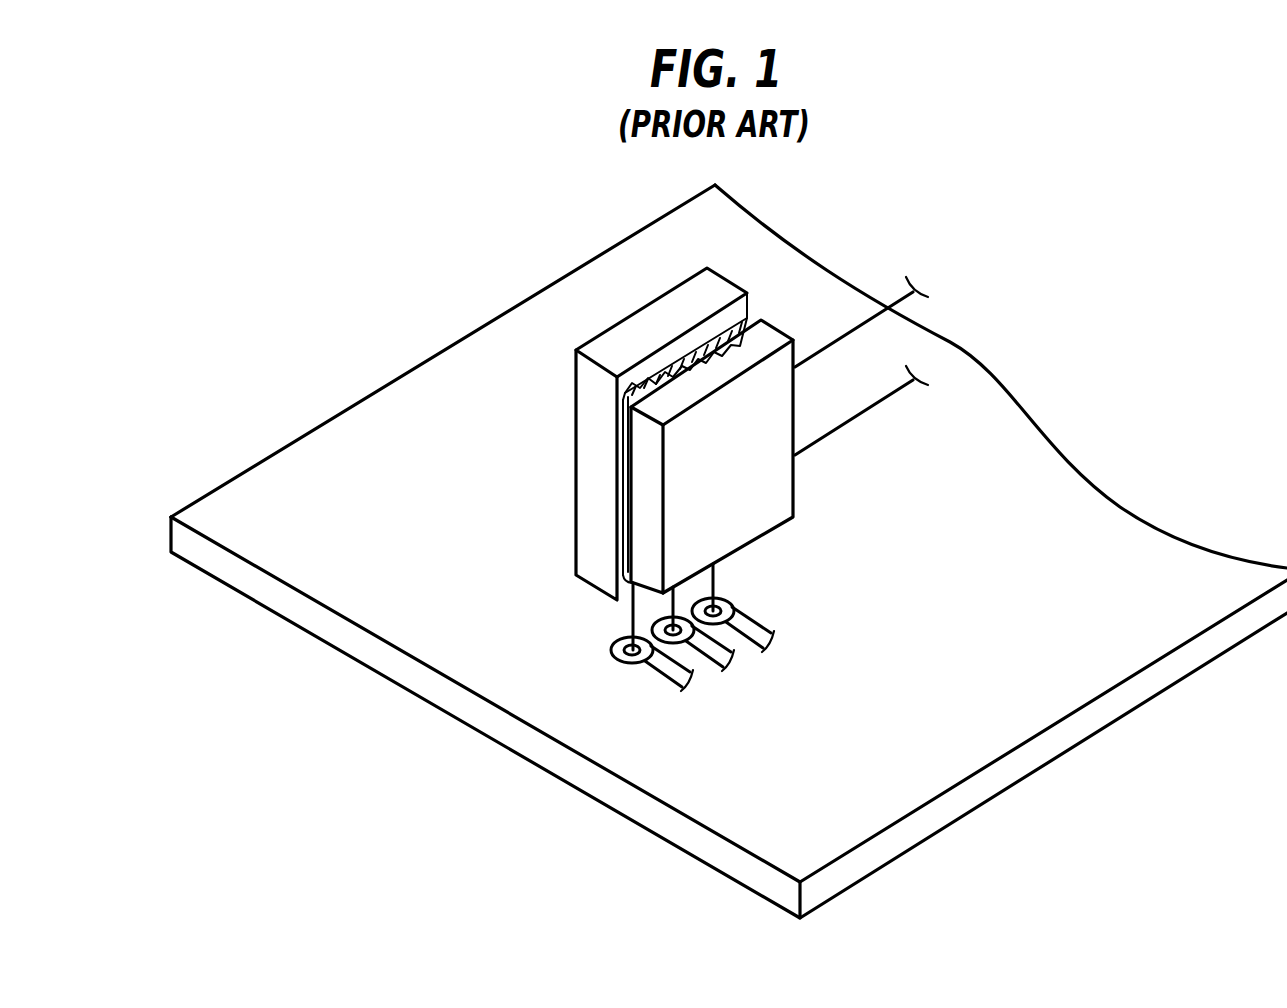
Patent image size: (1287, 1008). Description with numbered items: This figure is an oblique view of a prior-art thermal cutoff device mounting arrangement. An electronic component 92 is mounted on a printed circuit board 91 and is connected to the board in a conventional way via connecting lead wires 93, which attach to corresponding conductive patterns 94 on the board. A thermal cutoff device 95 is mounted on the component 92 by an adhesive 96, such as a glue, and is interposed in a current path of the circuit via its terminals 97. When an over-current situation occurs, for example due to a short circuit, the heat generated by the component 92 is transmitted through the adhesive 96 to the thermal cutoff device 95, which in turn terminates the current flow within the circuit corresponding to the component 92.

The printed circuit board 91 is at (442, 410).
The electronic component 92 is at (662, 322).
The connecting lead wires 93 is at (628, 612).
The conductive patterns 94 is at (648, 660).
The thermal cutoff device 95 is at (753, 507).
The adhesive 96 is at (732, 297).
The terminals 97 is at (870, 407).